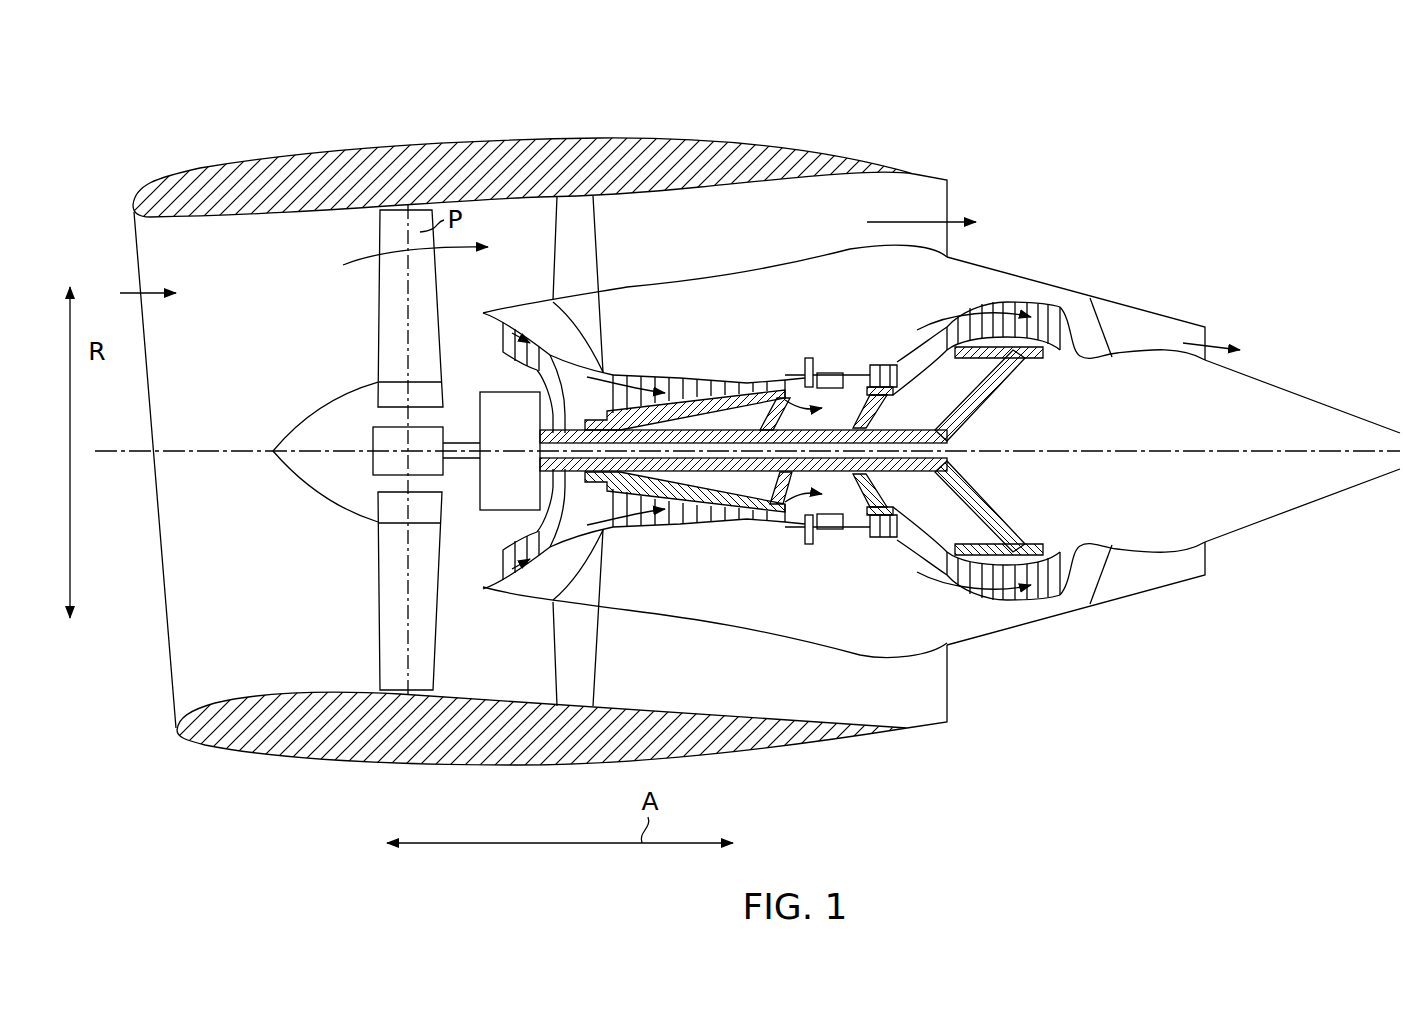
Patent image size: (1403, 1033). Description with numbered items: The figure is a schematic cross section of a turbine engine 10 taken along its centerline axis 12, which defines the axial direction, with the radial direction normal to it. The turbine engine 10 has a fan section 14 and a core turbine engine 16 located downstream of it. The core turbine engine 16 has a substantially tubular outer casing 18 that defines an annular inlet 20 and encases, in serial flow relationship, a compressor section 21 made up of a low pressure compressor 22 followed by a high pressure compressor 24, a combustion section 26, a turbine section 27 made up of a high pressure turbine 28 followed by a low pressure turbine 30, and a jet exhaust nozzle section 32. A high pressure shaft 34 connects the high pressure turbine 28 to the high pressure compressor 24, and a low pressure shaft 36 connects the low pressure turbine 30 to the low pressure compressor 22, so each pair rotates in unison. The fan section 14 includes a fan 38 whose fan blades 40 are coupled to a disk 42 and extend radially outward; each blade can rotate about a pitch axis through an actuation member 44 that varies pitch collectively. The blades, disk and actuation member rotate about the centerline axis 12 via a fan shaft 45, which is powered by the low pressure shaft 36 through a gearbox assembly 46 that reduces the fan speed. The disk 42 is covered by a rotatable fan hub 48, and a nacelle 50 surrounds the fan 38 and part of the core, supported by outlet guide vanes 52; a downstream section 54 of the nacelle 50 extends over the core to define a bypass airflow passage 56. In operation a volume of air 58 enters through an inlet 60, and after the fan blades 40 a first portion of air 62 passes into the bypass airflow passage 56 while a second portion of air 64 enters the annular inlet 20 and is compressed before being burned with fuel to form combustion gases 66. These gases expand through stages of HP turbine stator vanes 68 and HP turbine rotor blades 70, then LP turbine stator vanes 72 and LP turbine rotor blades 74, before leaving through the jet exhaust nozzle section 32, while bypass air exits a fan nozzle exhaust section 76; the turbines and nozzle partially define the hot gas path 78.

The turbine engine 10 is at (1216, 140).
The centerline axis 12 is at (1213, 450).
The fan section 14 is at (357, 432).
The core turbine engine 16 is at (715, 337).
The outer casing 18 is at (717, 623).
The annular inlet 20 is at (497, 573).
The compressor section 21 is at (662, 352).
The low pressure compressor 22 is at (552, 548).
The high pressure compressor 24 is at (648, 518).
The combustion section 26 is at (824, 540).
The turbine section 27 is at (936, 307).
The high pressure turbine 28 is at (1069, 565).
The low pressure turbine 30 is at (1031, 600).
The jet exhaust nozzle section 32 is at (1112, 583).
The high pressure shaft 34 is at (920, 430).
The low pressure shaft 36 is at (850, 427).
The fan 38 is at (318, 487).
The fan blades 40 is at (378, 635).
The disk 42 is at (380, 386).
The actuation member 44 is at (373, 442).
The fan shaft 45 is at (450, 444).
The gearbox assembly 46 is at (507, 400).
The fan hub 48 is at (298, 474).
The nacelle 50 is at (363, 767).
The outlet guide vanes 52 is at (593, 230).
The downstream section of the nacelle 54 is at (855, 160).
The bypass airflow passage 56 is at (709, 236).
The volume of air 58 is at (157, 292).
The inlet 60 is at (170, 632).
The first portion of air 62 is at (343, 266).
The second portion of air 64 is at (463, 322).
The combustion gases 66 is at (907, 360).
The HP turbine stator vanes 68 is at (845, 532).
The HP turbine rotor blades 70 is at (1033, 550).
The LP turbine stator vanes 72 is at (952, 580).
The LP turbine rotor blades 74 is at (966, 587).
The fan nozzle exhaust section 76 is at (930, 182).
The hot gas path 78 is at (1081, 352).